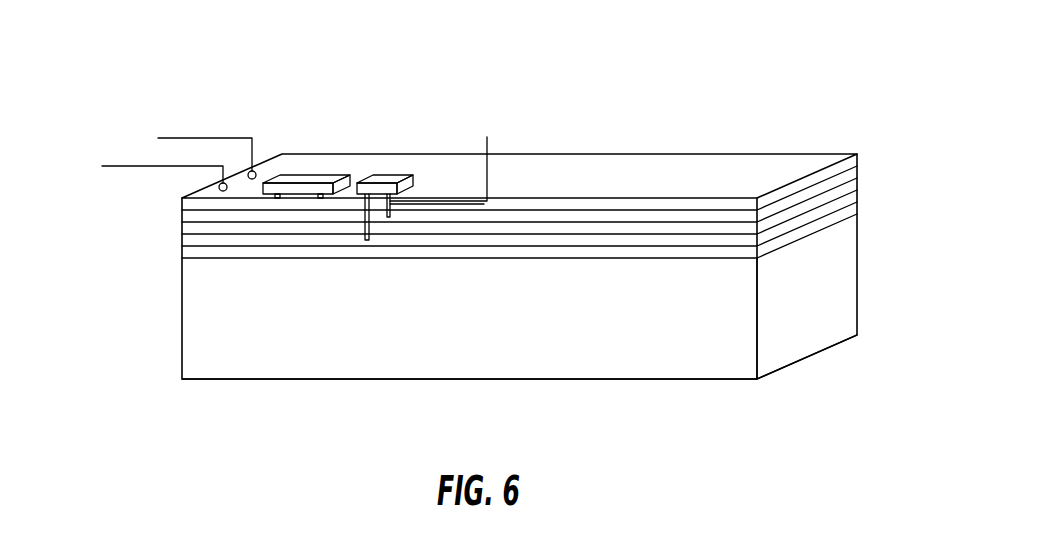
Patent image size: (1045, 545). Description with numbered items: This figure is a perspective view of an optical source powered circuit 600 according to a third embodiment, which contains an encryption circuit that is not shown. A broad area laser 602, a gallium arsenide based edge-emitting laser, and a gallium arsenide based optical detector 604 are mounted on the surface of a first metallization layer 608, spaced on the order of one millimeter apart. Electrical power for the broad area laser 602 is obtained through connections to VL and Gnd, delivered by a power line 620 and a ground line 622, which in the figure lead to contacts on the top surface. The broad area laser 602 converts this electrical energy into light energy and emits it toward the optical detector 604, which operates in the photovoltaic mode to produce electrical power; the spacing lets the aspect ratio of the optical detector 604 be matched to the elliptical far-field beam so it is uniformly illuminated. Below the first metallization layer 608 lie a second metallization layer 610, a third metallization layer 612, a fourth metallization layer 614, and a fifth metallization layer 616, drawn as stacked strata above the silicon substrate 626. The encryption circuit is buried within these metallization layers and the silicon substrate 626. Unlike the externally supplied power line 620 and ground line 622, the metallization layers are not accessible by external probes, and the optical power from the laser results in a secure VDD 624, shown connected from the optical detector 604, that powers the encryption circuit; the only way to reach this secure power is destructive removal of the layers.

The circuit 600 is at (127, 43).
The broad area laser 602 is at (302, 178).
The optical detector 604 is at (385, 177).
The first metallization layer 608 is at (855, 161).
The second metallization layer 610 is at (850, 175).
The third metallization layer 612 is at (840, 191).
The fourth metallization layer 614 is at (817, 213).
The fifth metallization layer 616 is at (798, 236).
The power line 620 is at (205, 138).
The ground line 622 is at (132, 168).
The secure VDD 624 is at (508, 112).
The silicon substrate 626 is at (818, 331).